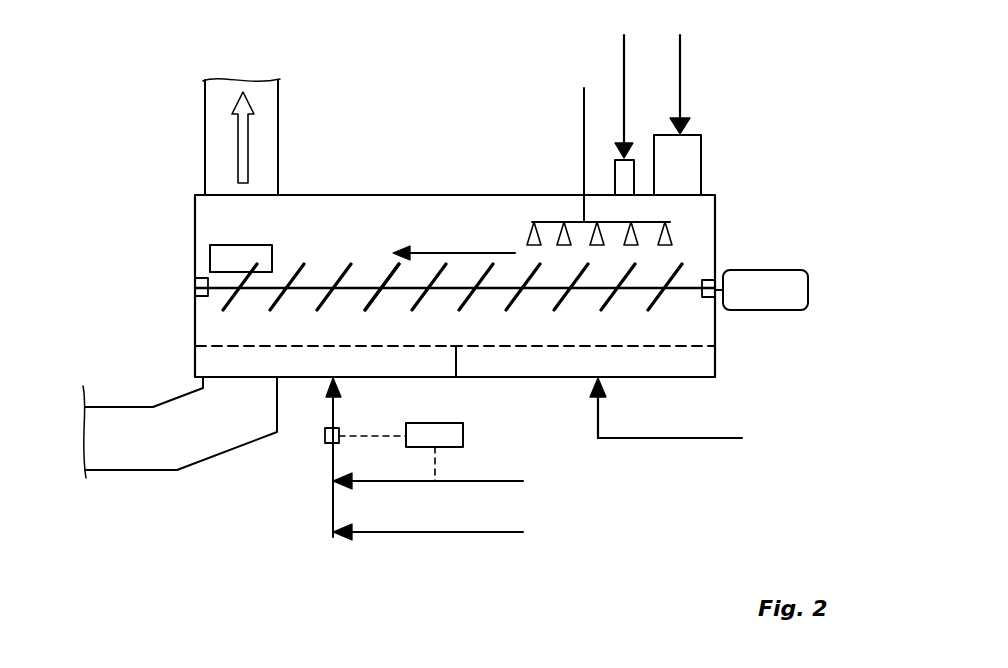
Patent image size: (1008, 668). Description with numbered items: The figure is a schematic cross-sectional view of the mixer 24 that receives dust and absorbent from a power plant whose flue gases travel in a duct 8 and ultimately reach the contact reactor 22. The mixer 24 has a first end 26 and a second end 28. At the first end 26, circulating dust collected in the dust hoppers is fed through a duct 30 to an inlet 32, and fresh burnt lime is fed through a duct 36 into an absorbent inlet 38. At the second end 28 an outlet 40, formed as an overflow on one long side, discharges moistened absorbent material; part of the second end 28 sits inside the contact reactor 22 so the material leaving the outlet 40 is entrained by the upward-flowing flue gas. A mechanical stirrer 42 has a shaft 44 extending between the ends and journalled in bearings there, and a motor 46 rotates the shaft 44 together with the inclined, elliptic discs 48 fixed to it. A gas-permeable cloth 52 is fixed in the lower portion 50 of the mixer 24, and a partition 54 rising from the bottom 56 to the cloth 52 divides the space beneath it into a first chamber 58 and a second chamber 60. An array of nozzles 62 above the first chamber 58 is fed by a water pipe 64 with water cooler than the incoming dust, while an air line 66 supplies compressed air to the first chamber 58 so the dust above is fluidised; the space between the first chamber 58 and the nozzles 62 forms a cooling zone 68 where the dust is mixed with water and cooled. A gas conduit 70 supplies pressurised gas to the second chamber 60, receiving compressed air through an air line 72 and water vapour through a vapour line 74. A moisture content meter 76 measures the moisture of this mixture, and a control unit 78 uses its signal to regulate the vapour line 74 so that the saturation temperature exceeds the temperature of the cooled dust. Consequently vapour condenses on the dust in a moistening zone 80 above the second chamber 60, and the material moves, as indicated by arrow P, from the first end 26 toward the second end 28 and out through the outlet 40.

The duct 8 is at (113, 425).
The contact reactor 22 is at (215, 115).
The mixer 24 is at (489, 104).
The first end 26 is at (698, 220).
The second end 28 is at (217, 220).
The duct 30 is at (681, 62).
The inlet 32 is at (690, 165).
The duct 36 is at (624, 60).
The absorbent inlet 38 is at (615, 168).
The outlet 40 is at (212, 262).
The mechanical stirrer 42 is at (306, 285).
The shaft 44 is at (276, 287).
The motor 46 is at (800, 290).
The inclined elliptic discs 48 is at (387, 268).
The lower portion 50 is at (658, 338).
The gas-permeable cloth 52 is at (618, 347).
The partition 54 is at (456, 358).
The bottom 56 is at (693, 382).
The first chamber 58 is at (572, 362).
The second chamber 60 is at (412, 363).
The nozzles 62 is at (673, 240).
The water pipe 64 is at (584, 145).
The air line 66 is at (715, 440).
The cooling zone 68 is at (608, 315).
The gas conduit 70 is at (333, 410).
The air line 72 is at (440, 532).
The vapour line 74 is at (402, 481).
The moisture content meter 76 is at (325, 432).
The control unit 78 is at (435, 430).
The moistening zone 80 is at (242, 320).
The arrow P is at (467, 253).